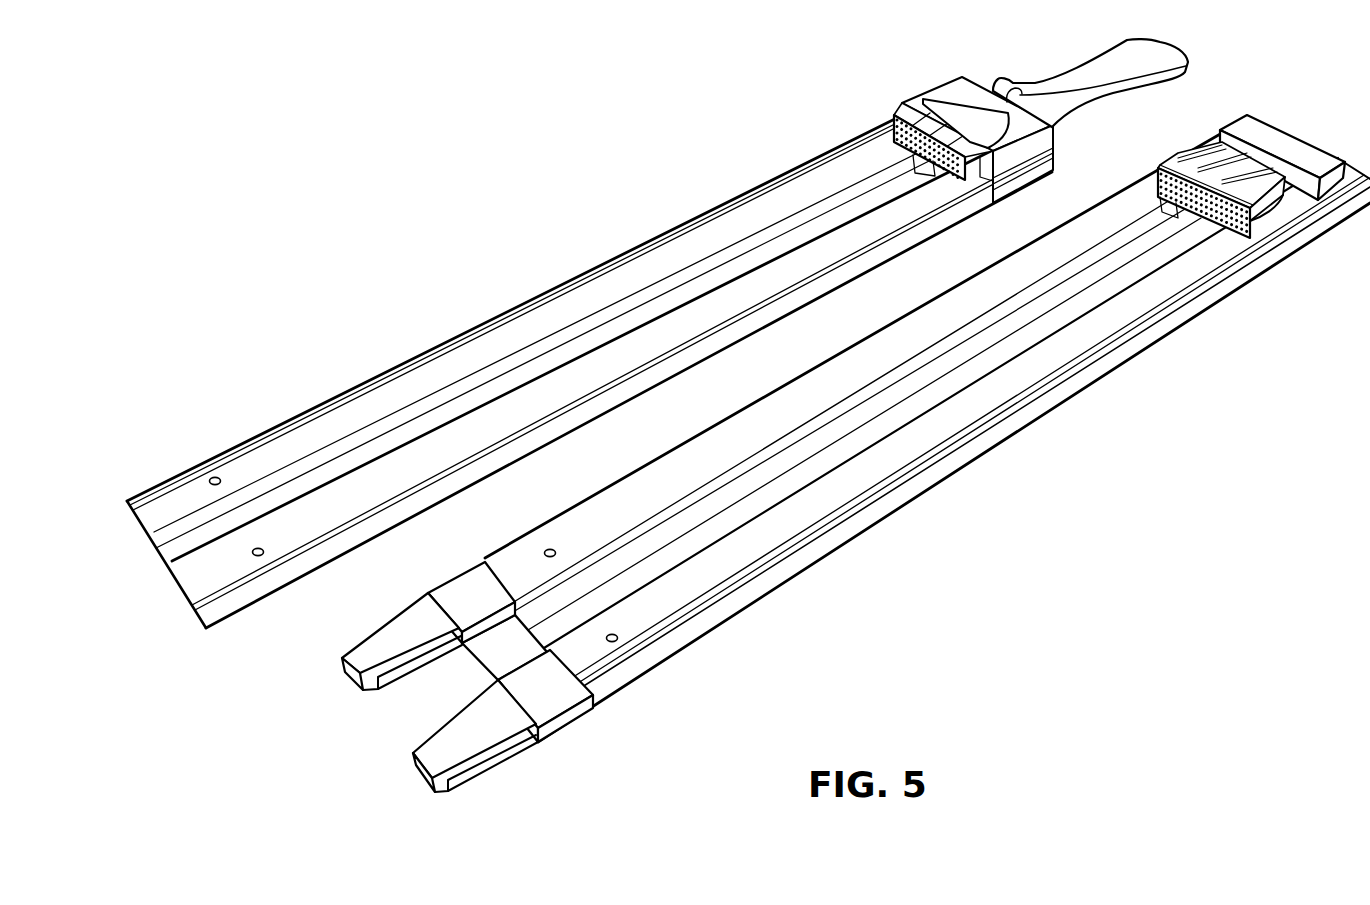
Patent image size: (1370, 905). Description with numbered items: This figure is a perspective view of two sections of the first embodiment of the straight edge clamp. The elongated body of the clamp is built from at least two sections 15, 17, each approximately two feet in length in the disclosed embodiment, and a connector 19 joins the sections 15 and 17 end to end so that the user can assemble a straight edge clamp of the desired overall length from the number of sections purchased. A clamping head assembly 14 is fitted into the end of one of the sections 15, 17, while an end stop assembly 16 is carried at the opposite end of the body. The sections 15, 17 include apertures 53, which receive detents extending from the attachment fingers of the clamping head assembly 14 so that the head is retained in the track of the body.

The clamping head assembly 14 is at (895, 136).
The section 15 is at (843, 495).
The end stop assembly 16 is at (1228, 240).
The section 17 is at (410, 383).
The connector 19 is at (401, 720).
The apertures 53 is at (215, 478).